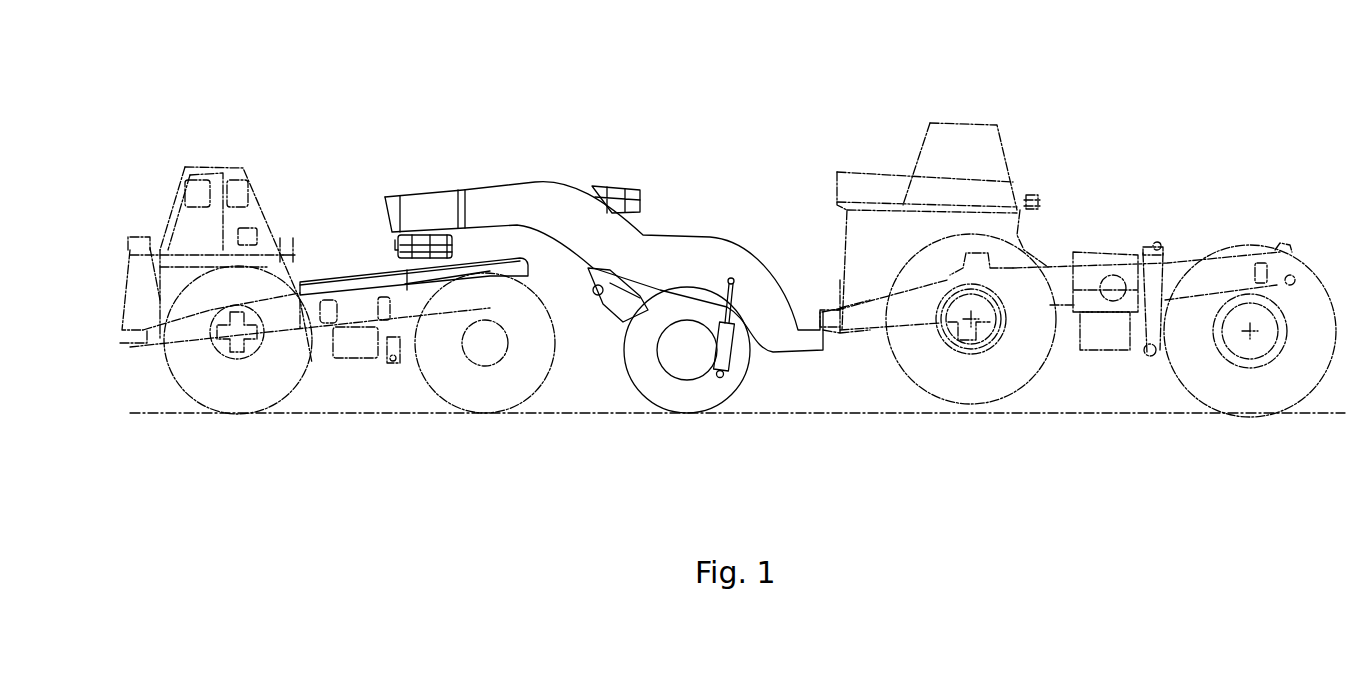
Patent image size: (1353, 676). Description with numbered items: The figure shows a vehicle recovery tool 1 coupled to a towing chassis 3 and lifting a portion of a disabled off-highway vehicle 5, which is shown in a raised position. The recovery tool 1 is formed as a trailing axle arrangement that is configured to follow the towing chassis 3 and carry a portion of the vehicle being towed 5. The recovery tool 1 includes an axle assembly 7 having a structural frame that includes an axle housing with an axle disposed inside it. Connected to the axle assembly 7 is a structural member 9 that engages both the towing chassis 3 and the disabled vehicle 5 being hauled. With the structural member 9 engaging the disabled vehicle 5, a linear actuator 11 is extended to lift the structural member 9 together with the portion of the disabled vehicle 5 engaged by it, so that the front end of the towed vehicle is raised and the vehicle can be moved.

The vehicle recovery tool 1 is at (604, 254).
The towing chassis 3 is at (325, 168).
The disabled off-highway vehicle 5 is at (1083, 155).
The axle assembly 7 is at (612, 392).
The structural member 9 is at (696, 252).
The linear actuator 11 is at (724, 339).